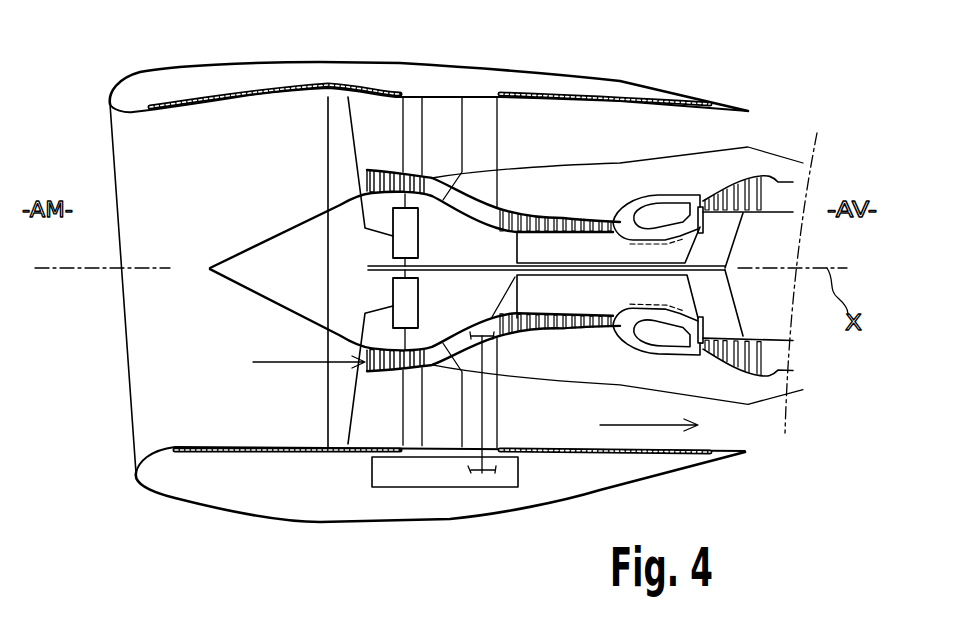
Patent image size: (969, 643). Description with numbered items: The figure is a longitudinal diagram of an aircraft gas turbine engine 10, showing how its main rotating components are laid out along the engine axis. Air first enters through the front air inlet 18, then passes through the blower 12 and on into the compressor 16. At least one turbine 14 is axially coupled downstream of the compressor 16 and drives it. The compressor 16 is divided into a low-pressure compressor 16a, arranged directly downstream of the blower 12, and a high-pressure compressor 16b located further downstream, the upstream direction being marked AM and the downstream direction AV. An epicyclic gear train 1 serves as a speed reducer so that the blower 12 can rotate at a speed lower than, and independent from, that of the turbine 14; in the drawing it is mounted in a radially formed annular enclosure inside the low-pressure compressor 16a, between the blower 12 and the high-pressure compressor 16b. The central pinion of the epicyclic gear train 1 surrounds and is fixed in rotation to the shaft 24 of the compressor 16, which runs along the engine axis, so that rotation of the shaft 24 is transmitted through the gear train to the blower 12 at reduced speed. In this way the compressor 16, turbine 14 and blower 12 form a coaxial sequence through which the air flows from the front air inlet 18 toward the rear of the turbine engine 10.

The aircraft gas turbine engine 10 is at (644, 64).
The blower 12 is at (326, 131).
The turbine 14 is at (751, 172).
The compressor 16 is at (518, 190).
The low-pressure compressor 16a is at (389, 172).
The high-pressure compressor 16b is at (549, 219).
The front air inlet 18 is at (200, 350).
The shaft 24 is at (468, 266).
The epicyclic gear train 1 is at (434, 303).